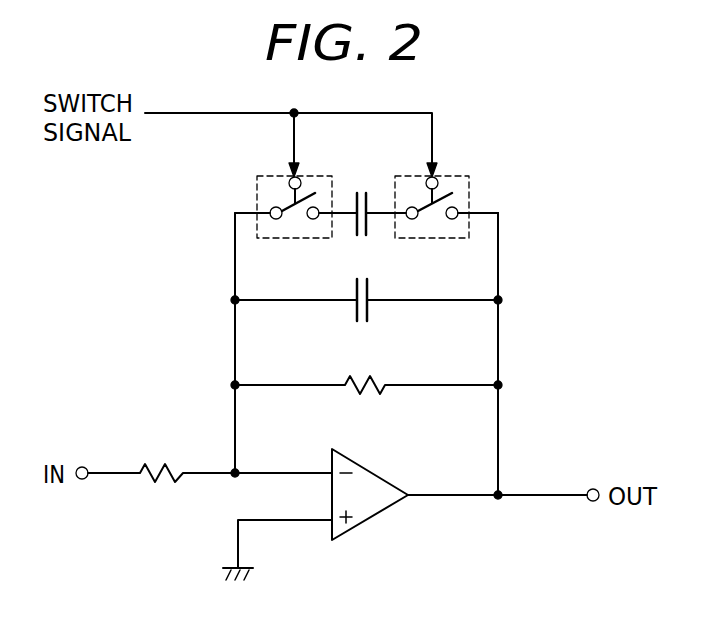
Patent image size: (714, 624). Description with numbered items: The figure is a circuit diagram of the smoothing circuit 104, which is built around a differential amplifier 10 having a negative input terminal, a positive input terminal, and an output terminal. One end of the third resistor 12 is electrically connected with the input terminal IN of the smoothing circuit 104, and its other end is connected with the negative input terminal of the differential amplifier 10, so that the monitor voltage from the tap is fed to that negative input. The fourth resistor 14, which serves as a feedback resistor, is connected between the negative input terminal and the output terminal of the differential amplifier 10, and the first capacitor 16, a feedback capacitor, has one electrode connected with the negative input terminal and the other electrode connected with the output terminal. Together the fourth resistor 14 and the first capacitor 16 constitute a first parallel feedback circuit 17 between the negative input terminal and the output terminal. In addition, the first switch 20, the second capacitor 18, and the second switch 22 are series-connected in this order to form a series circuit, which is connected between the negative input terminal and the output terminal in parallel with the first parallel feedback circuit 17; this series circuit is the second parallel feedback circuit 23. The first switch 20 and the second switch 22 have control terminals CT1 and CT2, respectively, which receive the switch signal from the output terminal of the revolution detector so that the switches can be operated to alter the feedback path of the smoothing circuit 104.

The differential amplifier 10 is at (372, 518).
The third resistor 12 is at (167, 462).
The fourth resistor 14 is at (371, 371).
The first capacitor 16 is at (370, 286).
The first parallel feedback circuit 17 is at (391, 322).
The second capacitor 18 is at (360, 190).
The first switch 20 is at (268, 174).
The second switch 22 is at (450, 176).
The second parallel feedback circuit 23 is at (508, 202).
The smoothing circuit 104 is at (552, 218).
The control terminal CT1 is at (293, 193).
The control terminal CT2 is at (432, 192).